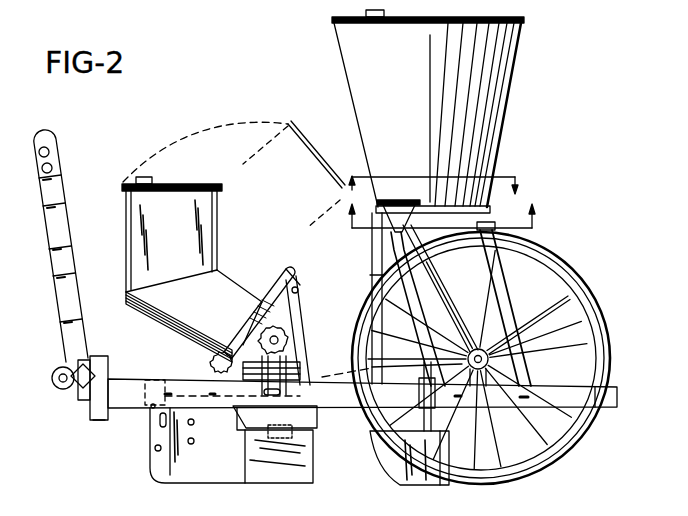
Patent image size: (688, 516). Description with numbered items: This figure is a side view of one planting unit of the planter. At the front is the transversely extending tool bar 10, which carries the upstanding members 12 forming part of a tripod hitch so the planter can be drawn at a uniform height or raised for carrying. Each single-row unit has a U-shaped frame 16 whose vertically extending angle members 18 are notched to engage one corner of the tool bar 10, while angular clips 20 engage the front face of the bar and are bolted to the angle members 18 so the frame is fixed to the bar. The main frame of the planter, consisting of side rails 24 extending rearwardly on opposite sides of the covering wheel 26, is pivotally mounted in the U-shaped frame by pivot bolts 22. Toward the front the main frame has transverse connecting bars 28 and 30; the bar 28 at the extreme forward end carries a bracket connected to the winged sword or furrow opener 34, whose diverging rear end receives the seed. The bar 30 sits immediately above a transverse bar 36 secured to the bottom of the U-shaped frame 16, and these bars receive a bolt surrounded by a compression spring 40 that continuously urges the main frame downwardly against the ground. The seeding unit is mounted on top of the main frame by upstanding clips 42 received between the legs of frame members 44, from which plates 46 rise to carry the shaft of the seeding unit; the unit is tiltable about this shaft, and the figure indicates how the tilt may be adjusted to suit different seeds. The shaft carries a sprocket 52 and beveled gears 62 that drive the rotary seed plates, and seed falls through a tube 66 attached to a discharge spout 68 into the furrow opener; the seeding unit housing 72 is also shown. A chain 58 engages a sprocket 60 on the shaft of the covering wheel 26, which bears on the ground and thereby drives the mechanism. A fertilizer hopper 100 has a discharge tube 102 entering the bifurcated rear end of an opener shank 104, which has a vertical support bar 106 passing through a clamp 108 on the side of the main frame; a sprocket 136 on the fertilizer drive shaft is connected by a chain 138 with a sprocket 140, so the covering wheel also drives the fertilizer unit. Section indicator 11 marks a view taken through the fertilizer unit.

The fertilizer hopper 100 is at (504, 88).
The sprocket 136 is at (398, 205).
The section line 11- 11 is at (436, 173).
The upstanding members 12 is at (60, 178).
The seed bin 72 is at (178, 241).
The frame members 44 is at (236, 346).
The plates 46 is at (260, 300).
The discharge spout 68 is at (292, 274).
The tube 66 is at (308, 312).
The beveled gear 62 is at (288, 332).
The compression spring 40 is at (220, 358).
The transverse bar 30 is at (281, 406).
The side rails 24 is at (357, 400).
The pivot bolts 22 is at (153, 397).
The tool bar 10 is at (88, 366).
The angular clips 20 is at (79, 390).
The U-shaped frame 16 is at (130, 405).
The angle members 18 is at (97, 417).
The sprocket 52 is at (150, 408).
The winged sword or furrow opener 34 is at (158, 462).
The transverse bar 36 is at (223, 417).
The transverse connecting bar 28 is at (227, 430).
The upstanding clips 42 is at (306, 418).
The chain 58 is at (333, 370).
The clamp 108 is at (385, 440).
The opener shank 104 is at (430, 485).
The vertical support bar 106 is at (430, 425).
The covering wheel 26 is at (537, 473).
The discharge tube 102 is at (525, 252).
The sprocket 60 is at (518, 330).
The sprocket 140 is at (537, 345).
The chain 138 is at (500, 236).